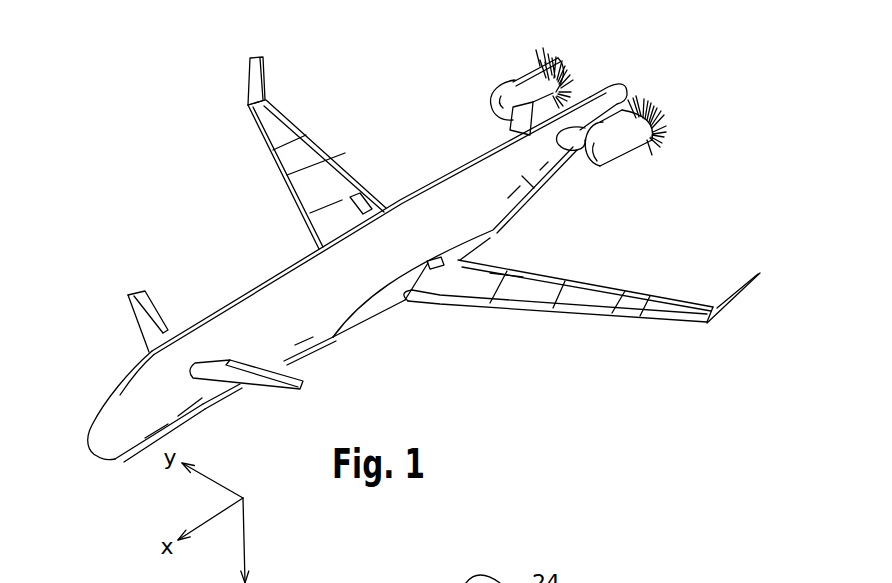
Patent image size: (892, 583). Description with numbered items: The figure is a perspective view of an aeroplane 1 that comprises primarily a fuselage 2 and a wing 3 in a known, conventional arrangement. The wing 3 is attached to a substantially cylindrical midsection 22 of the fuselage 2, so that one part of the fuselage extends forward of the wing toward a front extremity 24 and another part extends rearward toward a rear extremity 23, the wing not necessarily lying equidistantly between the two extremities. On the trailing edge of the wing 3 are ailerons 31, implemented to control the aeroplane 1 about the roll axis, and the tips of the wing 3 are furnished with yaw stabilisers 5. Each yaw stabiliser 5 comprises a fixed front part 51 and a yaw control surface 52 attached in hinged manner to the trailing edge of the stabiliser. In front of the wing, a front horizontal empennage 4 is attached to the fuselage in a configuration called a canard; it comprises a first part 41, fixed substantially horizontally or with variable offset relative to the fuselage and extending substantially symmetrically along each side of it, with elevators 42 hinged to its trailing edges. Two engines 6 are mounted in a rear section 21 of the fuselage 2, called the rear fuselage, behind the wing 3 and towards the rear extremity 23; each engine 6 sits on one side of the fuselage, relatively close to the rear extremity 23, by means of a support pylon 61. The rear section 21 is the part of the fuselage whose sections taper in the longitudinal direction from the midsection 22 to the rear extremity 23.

The aeroplane 1 is at (425, 282).
The fuselage 2 is at (350, 288).
The rear section of fuselage 21 is at (547, 190).
The midsection 22 is at (358, 287).
The rear extremity 23 is at (613, 97).
The front extremity 24 is at (93, 455).
The wing 3 is at (481, 168).
The ailerons 31 is at (290, 118).
The front horizontal empennage 4 is at (203, 348).
The first part 41 is at (137, 307).
The elevators 42 is at (132, 337).
The yaw stabilisers 5 is at (483, 168).
The fixed front part 51 is at (256, 92).
The yaw control surface 52 is at (267, 88).
The engines 6 is at (544, 121).
The support pylon 61 is at (518, 124).